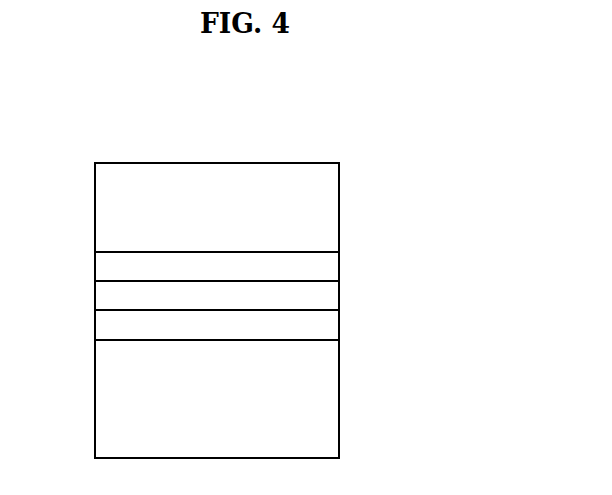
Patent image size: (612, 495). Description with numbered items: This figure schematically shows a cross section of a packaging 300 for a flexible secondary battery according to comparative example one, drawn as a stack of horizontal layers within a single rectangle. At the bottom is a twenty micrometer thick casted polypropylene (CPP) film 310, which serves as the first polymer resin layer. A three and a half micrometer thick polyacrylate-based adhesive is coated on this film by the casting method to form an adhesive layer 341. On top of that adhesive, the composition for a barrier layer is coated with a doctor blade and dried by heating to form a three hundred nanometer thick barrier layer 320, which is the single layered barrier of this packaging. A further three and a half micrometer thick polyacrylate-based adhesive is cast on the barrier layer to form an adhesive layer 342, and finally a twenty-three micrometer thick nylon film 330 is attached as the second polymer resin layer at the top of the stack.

The packaging 300 is at (158, 113).
The nylon film 330 is at (340, 206).
The adhesive layer 342 is at (340, 266).
The barrier layer 320 is at (340, 296).
The adhesive layer 341 is at (340, 325).
The casted polypropylene film 310 is at (340, 406).